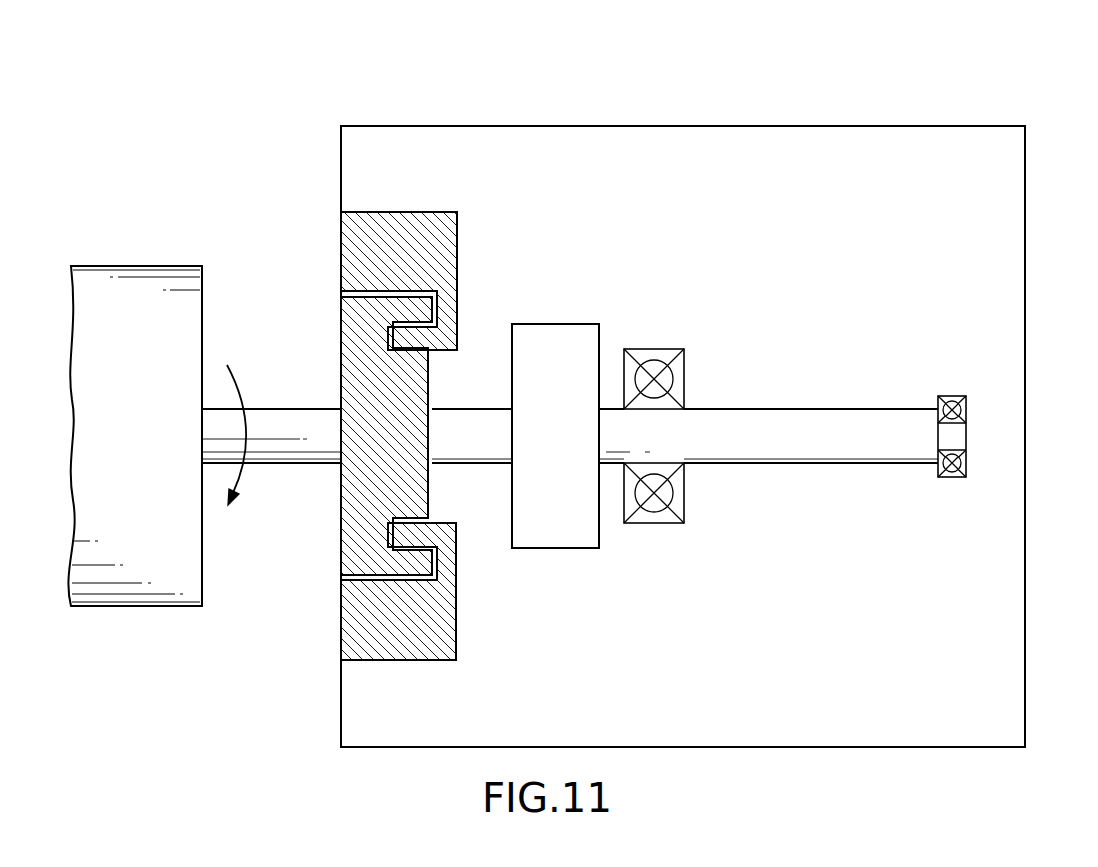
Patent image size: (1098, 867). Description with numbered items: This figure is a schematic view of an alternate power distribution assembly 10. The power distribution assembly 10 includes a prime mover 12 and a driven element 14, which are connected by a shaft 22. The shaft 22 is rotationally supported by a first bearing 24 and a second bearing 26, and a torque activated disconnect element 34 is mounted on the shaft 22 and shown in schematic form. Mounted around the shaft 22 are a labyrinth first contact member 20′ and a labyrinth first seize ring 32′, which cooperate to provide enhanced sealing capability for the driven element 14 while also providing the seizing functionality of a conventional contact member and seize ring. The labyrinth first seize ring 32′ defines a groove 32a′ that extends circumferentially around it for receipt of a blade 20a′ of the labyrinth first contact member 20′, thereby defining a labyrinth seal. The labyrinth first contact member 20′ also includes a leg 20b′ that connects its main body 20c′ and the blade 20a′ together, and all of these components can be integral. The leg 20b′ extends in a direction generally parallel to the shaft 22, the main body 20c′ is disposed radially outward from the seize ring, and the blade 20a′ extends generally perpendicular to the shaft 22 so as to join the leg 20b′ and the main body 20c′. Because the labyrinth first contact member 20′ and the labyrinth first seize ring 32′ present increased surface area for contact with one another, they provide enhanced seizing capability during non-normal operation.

The power distribution assembly 10 is at (386, 86).
The prime mover 12 is at (81, 236).
The driven element 14 is at (996, 74).
The shaft 22 is at (278, 424).
The first bearing 24 is at (951, 394).
The second bearing 26 is at (656, 356).
The torque activated disconnect element 34 is at (572, 542).
The labyrinth first contact member 20′ is at (411, 478).
The blade 20a′ is at (425, 531).
The leg 20b′ is at (448, 557).
The main body 20c′ is at (398, 631).
The labyrinth first seize ring 32′ is at (352, 452).
The groove 32a′ is at (391, 532).